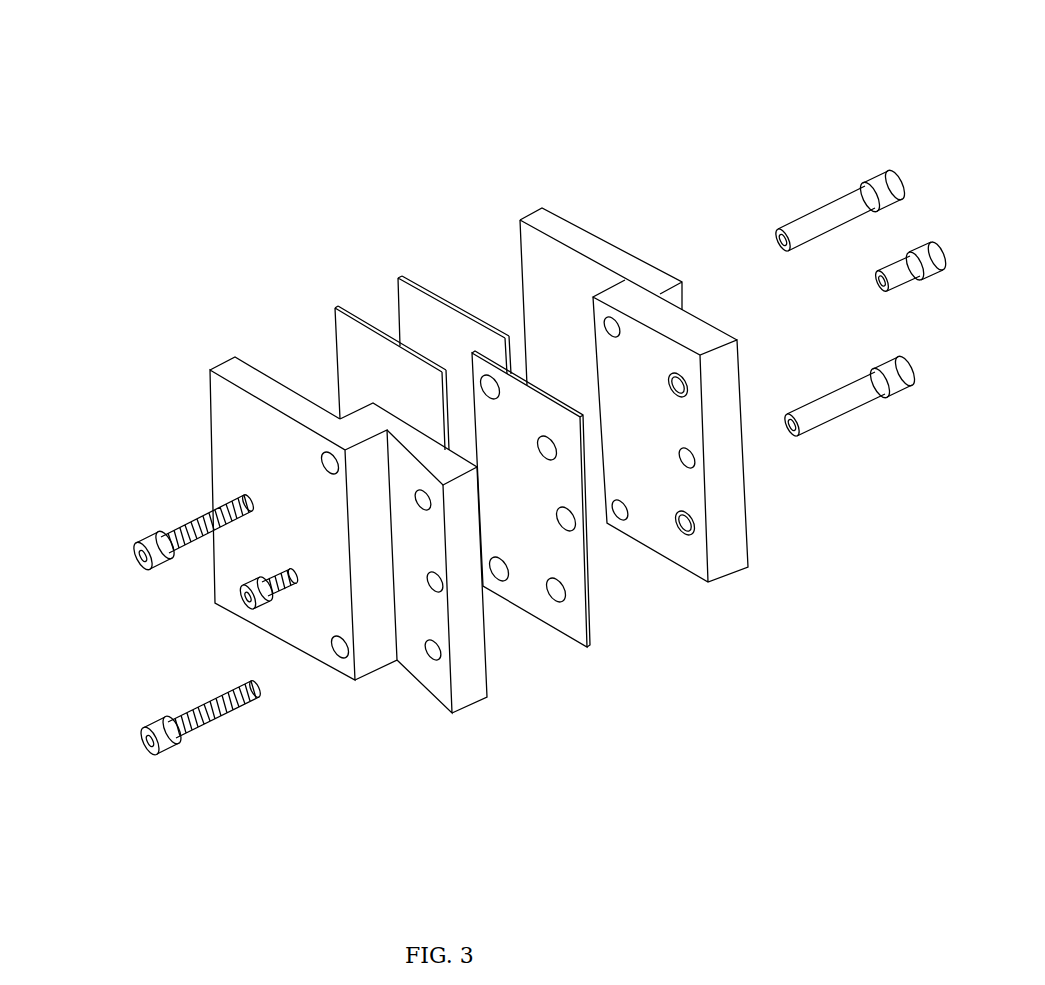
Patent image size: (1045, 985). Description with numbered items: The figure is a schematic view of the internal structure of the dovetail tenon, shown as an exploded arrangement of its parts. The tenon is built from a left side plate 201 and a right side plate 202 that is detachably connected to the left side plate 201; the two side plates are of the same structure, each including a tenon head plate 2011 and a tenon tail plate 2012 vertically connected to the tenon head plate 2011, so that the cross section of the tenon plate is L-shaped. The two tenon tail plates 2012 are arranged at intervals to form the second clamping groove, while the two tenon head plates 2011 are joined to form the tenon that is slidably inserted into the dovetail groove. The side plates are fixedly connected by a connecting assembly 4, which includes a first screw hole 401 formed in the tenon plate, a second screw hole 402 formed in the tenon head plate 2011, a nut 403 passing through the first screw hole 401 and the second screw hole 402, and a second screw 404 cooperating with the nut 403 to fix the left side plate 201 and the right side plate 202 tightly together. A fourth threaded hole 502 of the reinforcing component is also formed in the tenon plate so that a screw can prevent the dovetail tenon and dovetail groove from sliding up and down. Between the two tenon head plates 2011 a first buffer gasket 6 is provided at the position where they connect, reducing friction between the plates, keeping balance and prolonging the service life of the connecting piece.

The right side plate 202 is at (258, 341).
The fourth threaded hole 502 is at (423, 500).
The second screw hole 402 is at (530, 742).
The first screw hole 401 is at (340, 421).
The first buffer gasket 6 is at (590, 562).
The left side plate 201 is at (634, 353).
The tenon head plate 2011 is at (723, 487).
The tenon tail plate 2012 is at (555, 267).
The nut 403 is at (833, 420).
The second screw 404 is at (150, 568).
The connecting assembly 4 is at (225, 720).